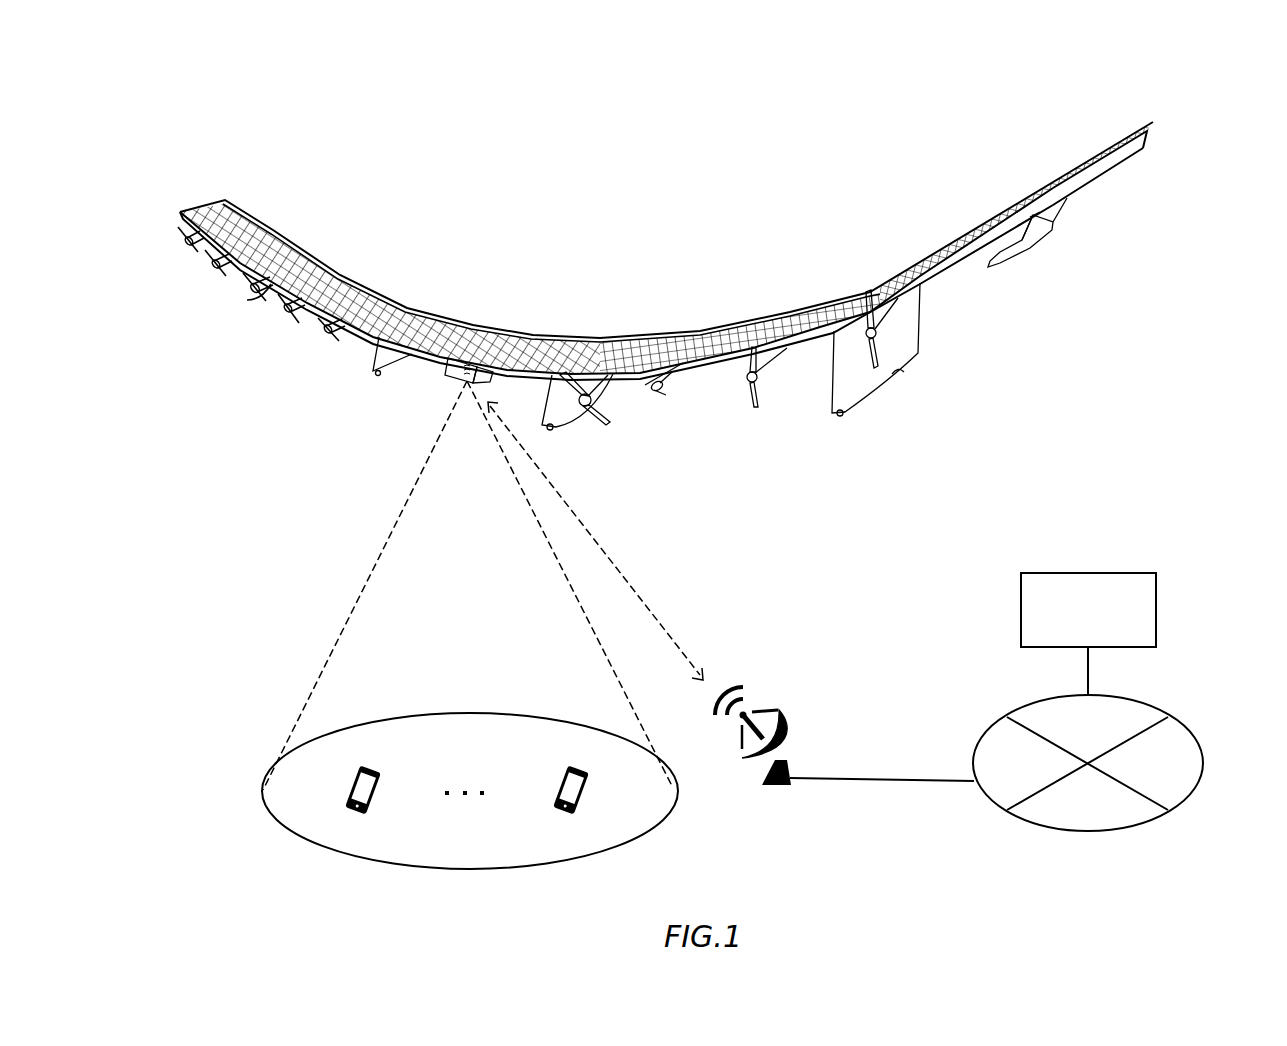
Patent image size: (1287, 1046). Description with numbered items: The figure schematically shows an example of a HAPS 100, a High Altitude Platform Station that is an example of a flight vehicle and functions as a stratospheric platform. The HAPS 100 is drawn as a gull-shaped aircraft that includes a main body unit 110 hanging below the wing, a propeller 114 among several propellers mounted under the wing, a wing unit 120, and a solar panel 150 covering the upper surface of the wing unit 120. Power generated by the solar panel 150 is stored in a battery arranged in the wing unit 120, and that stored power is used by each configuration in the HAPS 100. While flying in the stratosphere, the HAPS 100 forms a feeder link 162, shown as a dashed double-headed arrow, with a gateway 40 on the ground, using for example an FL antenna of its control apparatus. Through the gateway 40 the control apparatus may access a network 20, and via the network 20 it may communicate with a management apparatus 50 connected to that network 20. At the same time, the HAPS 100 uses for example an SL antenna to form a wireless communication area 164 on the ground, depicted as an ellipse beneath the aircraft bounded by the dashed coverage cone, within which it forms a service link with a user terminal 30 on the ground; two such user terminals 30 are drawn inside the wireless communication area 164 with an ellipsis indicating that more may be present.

The HAPS 100 is at (196, 74).
The main body unit 110 is at (448, 377).
The propeller 114 is at (183, 247).
The wing unit 120 is at (231, 200).
The solar panel 150 is at (357, 277).
The feeder link 162 is at (588, 534).
The wireless communication area 164 is at (463, 712).
The user terminal 30 is at (370, 770).
The gateway 40 is at (790, 723).
The management apparatus 50 is at (1123, 572).
The network 20 is at (1182, 722).